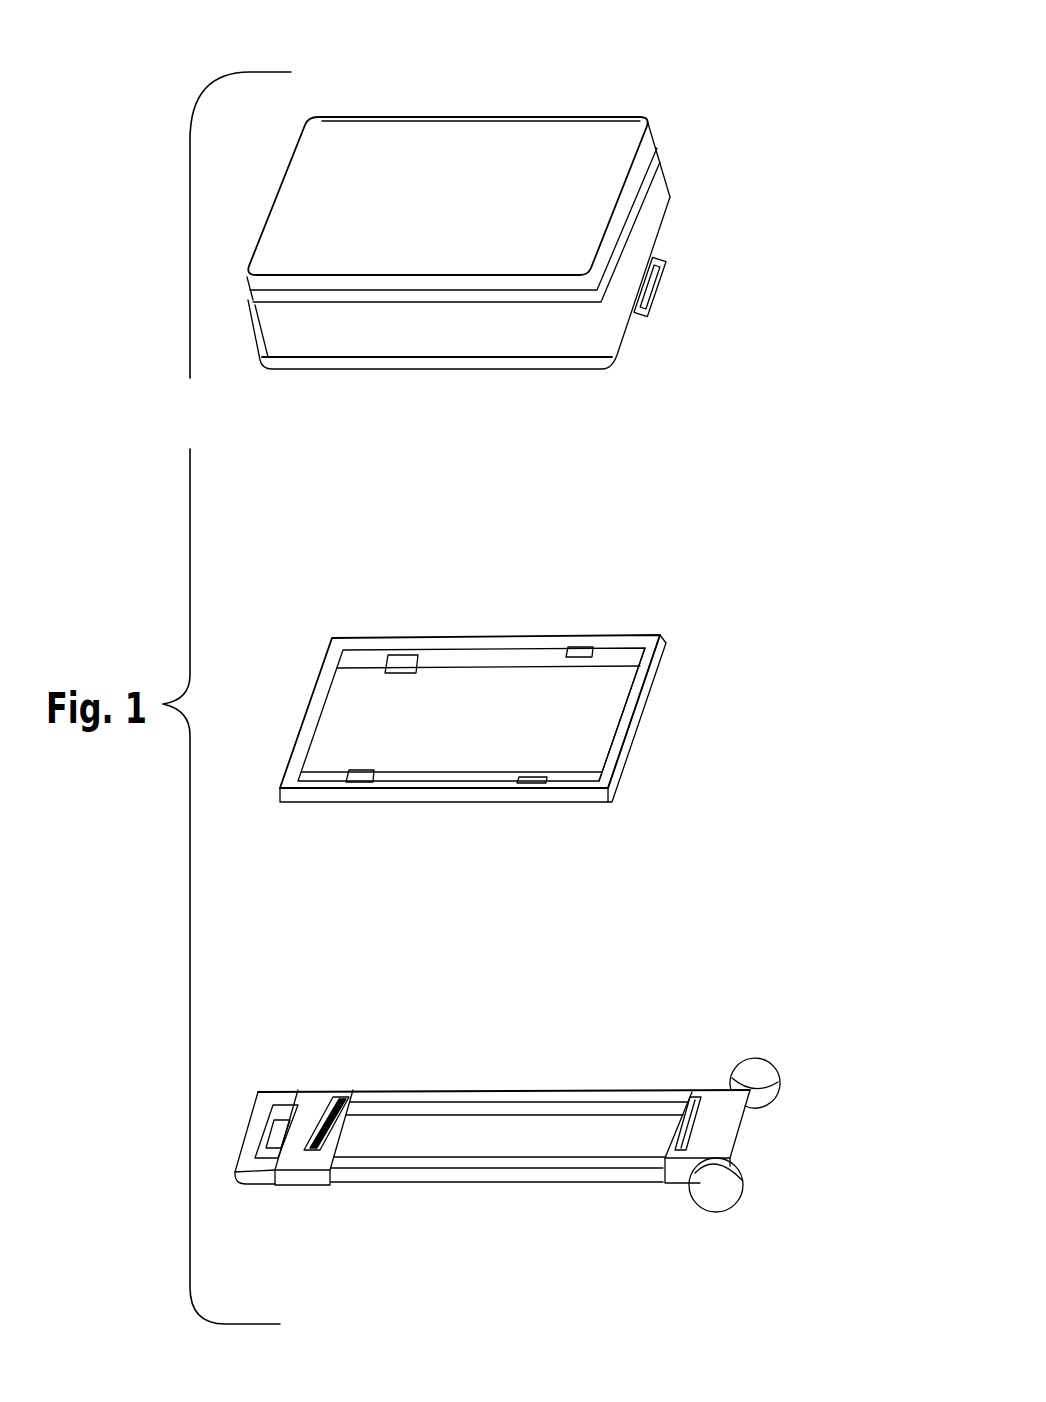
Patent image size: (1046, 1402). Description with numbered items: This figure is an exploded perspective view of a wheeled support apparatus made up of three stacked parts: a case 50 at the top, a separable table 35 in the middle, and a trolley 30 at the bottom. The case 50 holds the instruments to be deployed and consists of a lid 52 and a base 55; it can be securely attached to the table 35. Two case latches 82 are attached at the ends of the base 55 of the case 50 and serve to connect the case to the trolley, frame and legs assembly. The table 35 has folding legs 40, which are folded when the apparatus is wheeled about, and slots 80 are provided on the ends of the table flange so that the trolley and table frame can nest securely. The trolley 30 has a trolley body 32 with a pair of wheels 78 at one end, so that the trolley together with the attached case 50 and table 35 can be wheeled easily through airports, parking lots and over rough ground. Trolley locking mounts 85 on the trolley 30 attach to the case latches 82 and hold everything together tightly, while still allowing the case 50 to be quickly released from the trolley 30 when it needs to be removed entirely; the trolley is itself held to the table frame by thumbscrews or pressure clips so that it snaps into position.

The case 50 is at (547, 209).
The lid 52 is at (615, 114).
The base 55 is at (626, 356).
The case latch 82 is at (660, 285).
The table 35 is at (521, 674).
The folding legs 40 is at (470, 678).
The slot 80 is at (650, 687).
The trolley 30 is at (562, 1083).
The trolley body 32 is at (498, 1092).
The trolley locking mount 85 is at (317, 1135).
The wheel 78 is at (770, 1062).